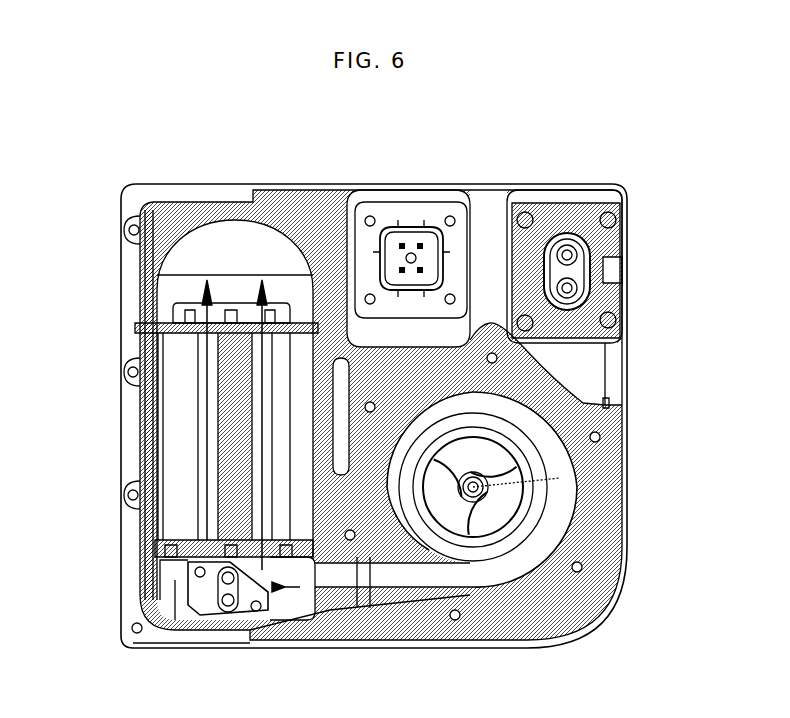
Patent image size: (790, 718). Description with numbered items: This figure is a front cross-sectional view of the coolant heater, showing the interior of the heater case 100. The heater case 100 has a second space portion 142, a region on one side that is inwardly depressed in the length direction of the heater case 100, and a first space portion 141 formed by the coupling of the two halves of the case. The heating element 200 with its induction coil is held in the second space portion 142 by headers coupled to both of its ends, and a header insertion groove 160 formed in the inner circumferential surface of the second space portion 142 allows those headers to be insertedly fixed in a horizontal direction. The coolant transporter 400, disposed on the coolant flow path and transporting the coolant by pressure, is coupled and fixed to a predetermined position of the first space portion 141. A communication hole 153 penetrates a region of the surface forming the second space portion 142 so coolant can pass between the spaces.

The heater case 100 is at (530, 185).
The first space portion 141 is at (428, 213).
The second space portion 142 is at (226, 238).
The communication hole 153 is at (333, 603).
The header insertion groove 160 is at (133, 323).
The heating element 200 is at (180, 482).
The coolant transporter 400 is at (628, 472).